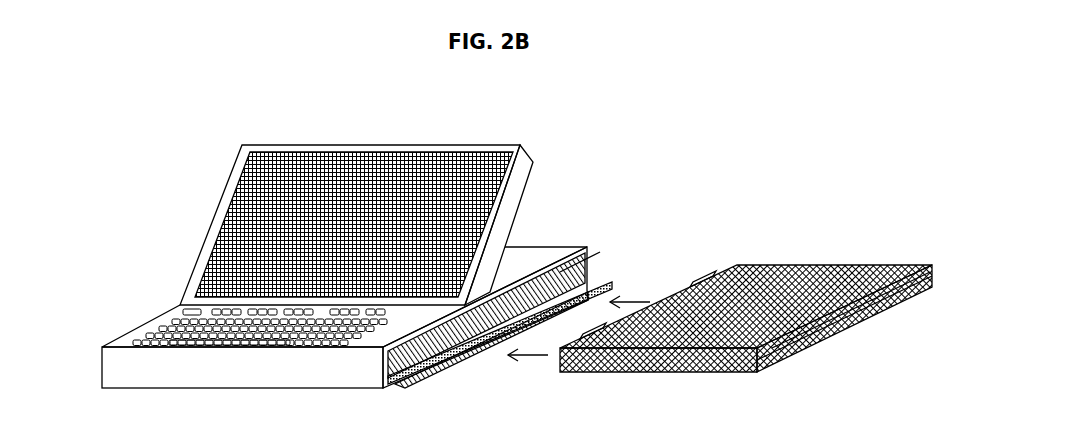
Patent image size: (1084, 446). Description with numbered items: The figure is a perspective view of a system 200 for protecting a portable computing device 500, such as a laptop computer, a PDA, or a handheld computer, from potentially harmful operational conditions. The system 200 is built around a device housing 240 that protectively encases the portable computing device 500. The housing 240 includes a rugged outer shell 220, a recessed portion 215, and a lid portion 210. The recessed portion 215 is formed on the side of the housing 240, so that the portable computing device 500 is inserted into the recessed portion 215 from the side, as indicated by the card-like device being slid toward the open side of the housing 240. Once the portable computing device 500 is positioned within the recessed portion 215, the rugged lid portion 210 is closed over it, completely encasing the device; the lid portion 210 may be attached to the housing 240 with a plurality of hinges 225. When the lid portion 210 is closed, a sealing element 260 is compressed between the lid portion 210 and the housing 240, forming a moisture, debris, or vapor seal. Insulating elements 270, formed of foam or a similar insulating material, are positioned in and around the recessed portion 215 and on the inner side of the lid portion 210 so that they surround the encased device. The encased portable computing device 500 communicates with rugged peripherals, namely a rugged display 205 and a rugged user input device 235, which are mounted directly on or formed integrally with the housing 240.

The system 200 is at (297, 132).
The rugged display 205 is at (293, 194).
The rugged user input device 235 is at (168, 327).
The rugged outer shell 220 is at (198, 374).
The device housing 240 is at (283, 392).
The recessed portion 215 is at (379, 365).
The hinges 225 is at (399, 373).
The lid portion 210 is at (472, 360).
The insulating elements 270 is at (572, 272).
The sealing element 260 is at (615, 286).
The portable computing device 500 is at (774, 278).